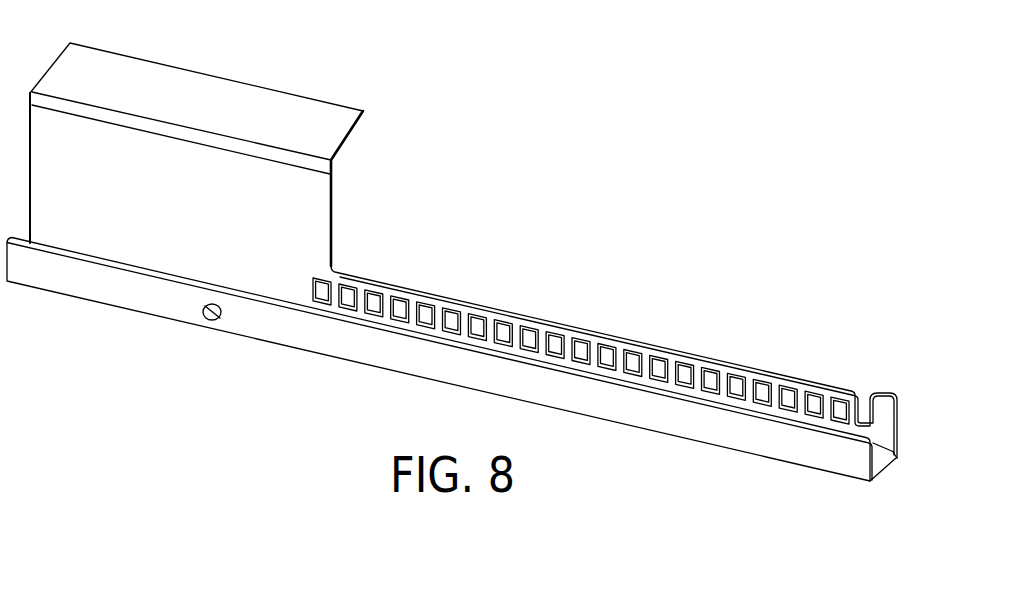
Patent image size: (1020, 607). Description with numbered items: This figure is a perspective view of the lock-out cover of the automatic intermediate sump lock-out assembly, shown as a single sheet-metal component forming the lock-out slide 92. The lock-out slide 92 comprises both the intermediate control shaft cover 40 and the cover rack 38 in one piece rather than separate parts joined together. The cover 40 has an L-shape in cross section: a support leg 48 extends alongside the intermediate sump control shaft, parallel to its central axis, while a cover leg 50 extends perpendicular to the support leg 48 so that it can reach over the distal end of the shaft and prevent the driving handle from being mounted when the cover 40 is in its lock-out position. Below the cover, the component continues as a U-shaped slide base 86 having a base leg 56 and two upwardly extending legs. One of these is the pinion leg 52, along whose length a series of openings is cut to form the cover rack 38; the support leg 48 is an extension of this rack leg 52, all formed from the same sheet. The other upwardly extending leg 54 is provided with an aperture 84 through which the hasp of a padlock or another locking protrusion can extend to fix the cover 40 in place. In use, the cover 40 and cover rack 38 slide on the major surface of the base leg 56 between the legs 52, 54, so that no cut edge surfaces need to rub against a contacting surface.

The intermediate control shaft cover 40 is at (224, 70).
The cover leg 50 is at (320, 118).
The support leg 48 is at (100, 237).
The lock-out slide 92 is at (502, 131).
The cover rack 38 is at (551, 333).
The aperture 84 is at (205, 321).
The pinion leg 52 is at (883, 412).
The base leg 56 is at (860, 455).
The upwardly extending leg 54 is at (860, 467).
The U-shaped slide base 86 is at (896, 460).